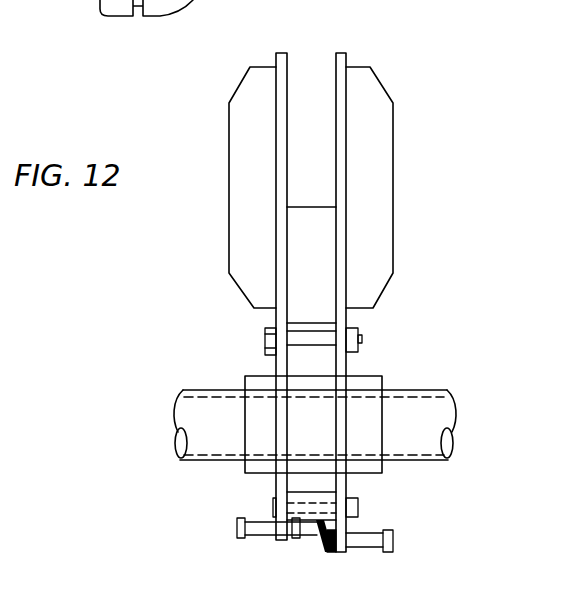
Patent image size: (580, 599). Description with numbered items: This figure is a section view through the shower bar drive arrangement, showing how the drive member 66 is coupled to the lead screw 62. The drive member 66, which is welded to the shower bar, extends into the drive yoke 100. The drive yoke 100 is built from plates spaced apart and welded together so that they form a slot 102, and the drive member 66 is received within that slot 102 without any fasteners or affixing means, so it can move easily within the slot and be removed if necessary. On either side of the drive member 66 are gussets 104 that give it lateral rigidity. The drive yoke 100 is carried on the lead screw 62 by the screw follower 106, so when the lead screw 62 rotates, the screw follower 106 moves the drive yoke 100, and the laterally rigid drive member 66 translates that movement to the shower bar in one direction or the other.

The drive member 66 is at (312, 73).
The drive yoke 100 is at (218, 349).
The slot 102 is at (324, 273).
The gussets 104 is at (248, 150).
The lead screw 62 is at (176, 448).
The screw follower 106 is at (253, 470).